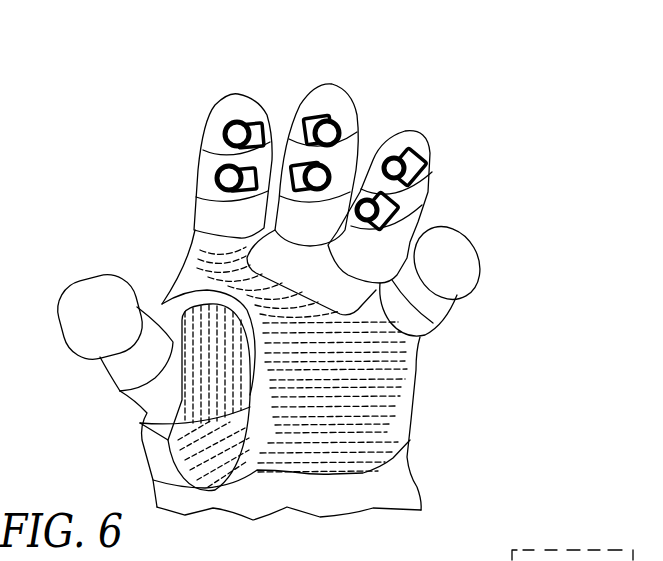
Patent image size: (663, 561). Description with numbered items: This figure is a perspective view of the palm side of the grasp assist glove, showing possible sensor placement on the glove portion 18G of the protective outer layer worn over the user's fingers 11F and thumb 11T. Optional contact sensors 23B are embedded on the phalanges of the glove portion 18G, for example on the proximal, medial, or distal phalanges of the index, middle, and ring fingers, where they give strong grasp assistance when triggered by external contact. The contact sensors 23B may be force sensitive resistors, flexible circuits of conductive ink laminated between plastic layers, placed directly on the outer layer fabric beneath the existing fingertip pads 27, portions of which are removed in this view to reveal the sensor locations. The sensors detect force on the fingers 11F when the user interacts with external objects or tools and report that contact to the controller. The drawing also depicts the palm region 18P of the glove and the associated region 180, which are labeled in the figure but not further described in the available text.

The fingers 11F is at (322, 99).
The thumb 11T is at (90, 305).
The glove portion 18G is at (507, 90).
The palm portion 18P is at (300, 395).
The palm pad region 180 is at (367, 387).
The contact sensors 23B is at (226, 128).
The fingertip pads 27 is at (331, 97).